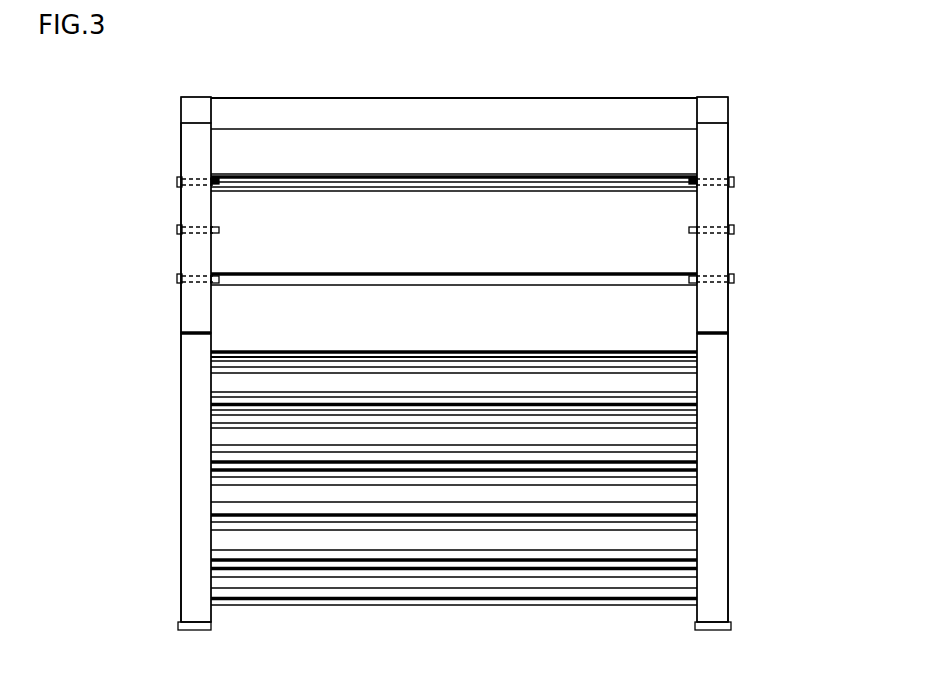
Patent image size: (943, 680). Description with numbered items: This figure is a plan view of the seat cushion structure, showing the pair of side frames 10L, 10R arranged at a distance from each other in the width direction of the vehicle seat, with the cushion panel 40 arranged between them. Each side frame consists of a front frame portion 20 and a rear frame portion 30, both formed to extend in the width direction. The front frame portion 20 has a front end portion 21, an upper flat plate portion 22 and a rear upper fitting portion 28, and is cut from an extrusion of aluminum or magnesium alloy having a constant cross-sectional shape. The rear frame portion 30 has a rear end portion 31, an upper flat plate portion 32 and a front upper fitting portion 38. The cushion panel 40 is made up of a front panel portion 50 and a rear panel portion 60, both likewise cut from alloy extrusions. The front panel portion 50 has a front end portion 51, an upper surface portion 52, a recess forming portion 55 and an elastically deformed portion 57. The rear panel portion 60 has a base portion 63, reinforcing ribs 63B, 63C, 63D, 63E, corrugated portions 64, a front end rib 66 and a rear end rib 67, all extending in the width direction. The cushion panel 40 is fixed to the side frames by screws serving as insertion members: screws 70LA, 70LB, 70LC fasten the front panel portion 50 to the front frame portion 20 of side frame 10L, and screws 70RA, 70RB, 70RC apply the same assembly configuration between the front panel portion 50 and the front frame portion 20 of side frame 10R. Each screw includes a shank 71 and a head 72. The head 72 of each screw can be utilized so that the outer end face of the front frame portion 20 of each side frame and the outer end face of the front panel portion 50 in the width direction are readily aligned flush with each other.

The side frame 10L is at (100, 302).
The side frame 10R is at (804, 302).
The front frame portion 20 is at (172, 309).
The front end portion 21 is at (190, 96).
The upper flat plate portion 22 is at (200, 143).
The rear upper fitting portion 28 is at (200, 333).
The rear frame portion 30 is at (172, 476).
The rear end portion 31 is at (195, 630).
The upper flat plate portion 32 is at (195, 537).
The front upper fitting portion 38 is at (203, 335).
The cushion panel 40 is at (380, 56).
The front panel portion 50 is at (399, 144).
The front end portion 51 is at (299, 97).
The upper surface portion 52 is at (334, 150).
The recess forming portion 55 is at (575, 182).
The elastically deformed portion 57 is at (587, 278).
The rear panel portion 60 is at (505, 456).
The base portion 63 is at (393, 458).
The reinforcing rib 63B is at (317, 408).
The reinforcing rib 63C is at (430, 467).
The reinforcing rib 63D is at (516, 522).
The reinforcing rib 63E is at (594, 565).
The corrugated portions 64 is at (284, 382).
The front end rib 66 is at (248, 357).
The rear end rib 67 is at (665, 602).
The screw 70LA is at (118, 155).
The screw 70LB is at (118, 203).
The screw 70LC is at (118, 251).
The screw 70RA is at (790, 155).
The screw 70RB is at (790, 203).
The screw 70RC is at (790, 251).
The shank 71 is at (197, 178).
The head 72 is at (177, 182).